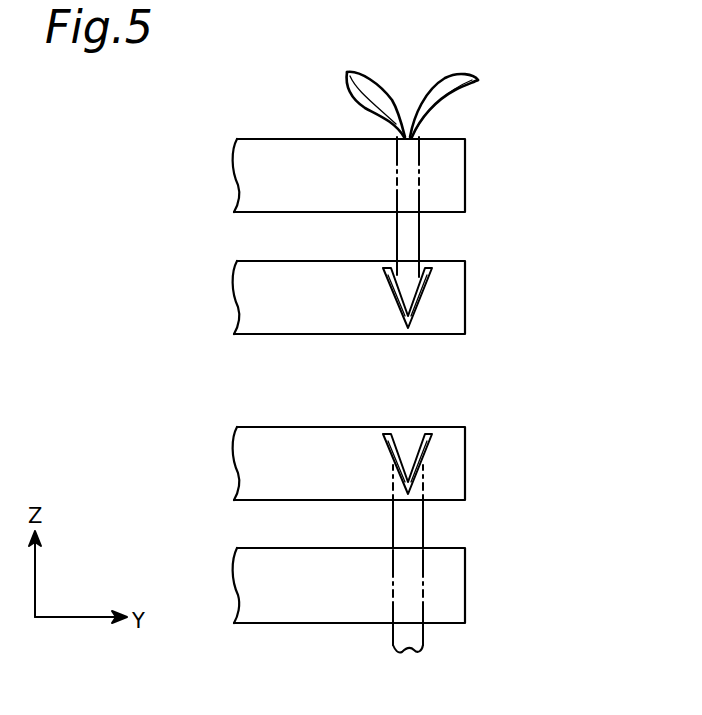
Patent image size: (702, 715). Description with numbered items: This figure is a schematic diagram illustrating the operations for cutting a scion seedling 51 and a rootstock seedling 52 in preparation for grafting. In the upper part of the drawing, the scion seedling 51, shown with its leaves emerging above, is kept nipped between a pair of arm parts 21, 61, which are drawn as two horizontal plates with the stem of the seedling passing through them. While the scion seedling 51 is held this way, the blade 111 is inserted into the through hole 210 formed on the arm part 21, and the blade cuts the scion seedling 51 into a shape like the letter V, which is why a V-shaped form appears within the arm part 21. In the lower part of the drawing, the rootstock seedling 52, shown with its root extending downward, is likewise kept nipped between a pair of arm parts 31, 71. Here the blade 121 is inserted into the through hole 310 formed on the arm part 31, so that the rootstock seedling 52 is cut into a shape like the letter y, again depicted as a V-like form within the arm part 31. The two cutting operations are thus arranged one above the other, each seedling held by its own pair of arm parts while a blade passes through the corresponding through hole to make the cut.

The scion seedling 51 is at (462, 75).
The arm part 61 is at (466, 168).
The arm part 21 is at (466, 280).
The through hole 210 is at (432, 278).
The blade 111 is at (418, 307).
The arm part 31 is at (466, 460).
The through hole 310 is at (432, 444).
The blade 121 is at (418, 478).
The arm part 71 is at (466, 577).
The rootstock seedling 52 is at (424, 637).